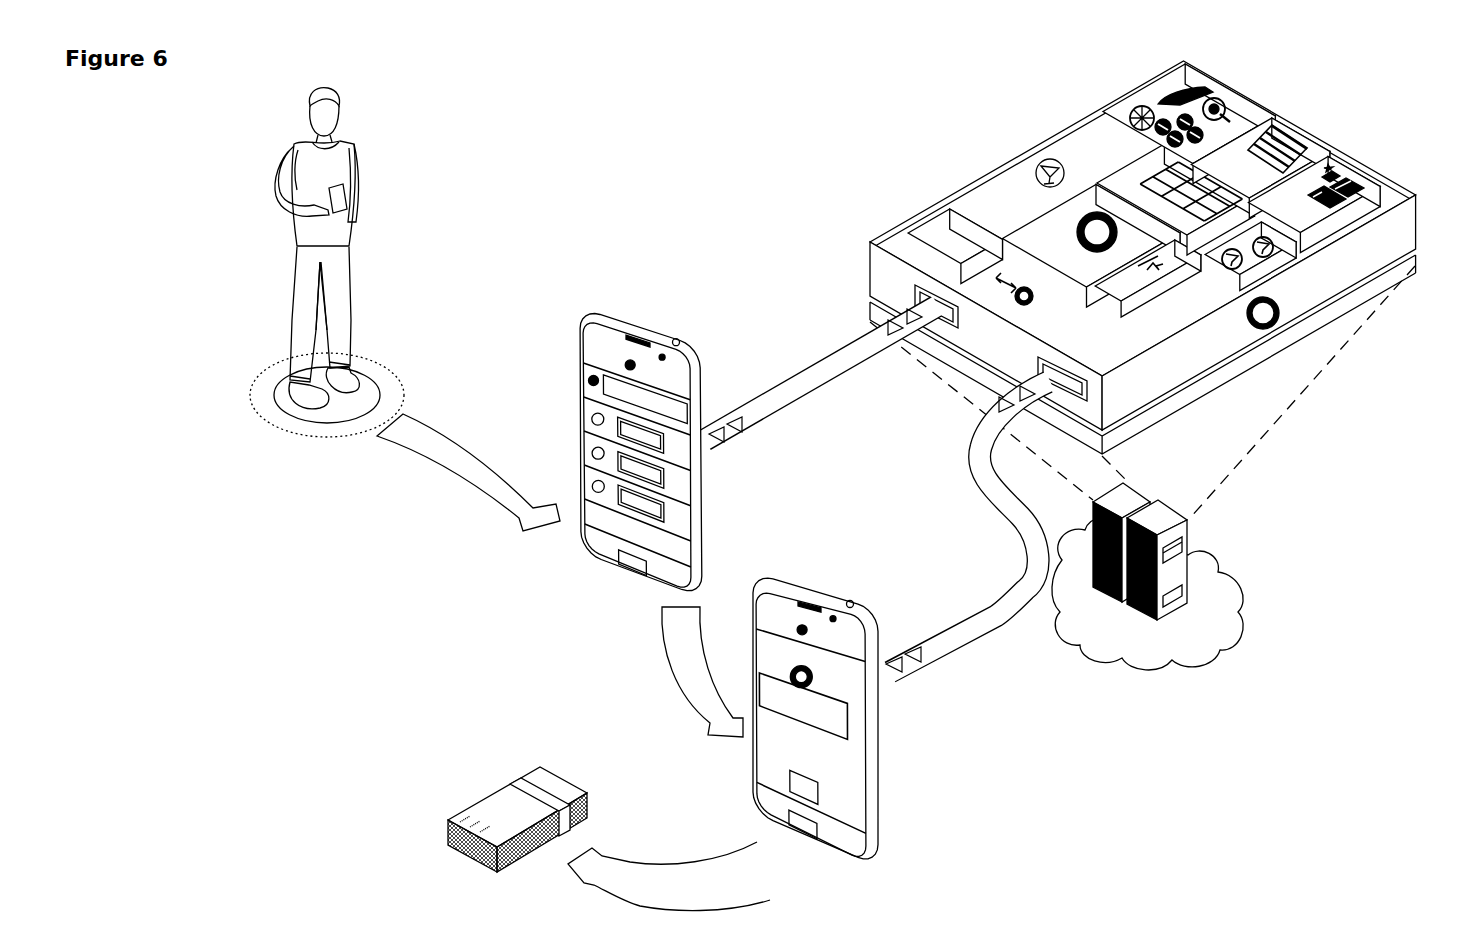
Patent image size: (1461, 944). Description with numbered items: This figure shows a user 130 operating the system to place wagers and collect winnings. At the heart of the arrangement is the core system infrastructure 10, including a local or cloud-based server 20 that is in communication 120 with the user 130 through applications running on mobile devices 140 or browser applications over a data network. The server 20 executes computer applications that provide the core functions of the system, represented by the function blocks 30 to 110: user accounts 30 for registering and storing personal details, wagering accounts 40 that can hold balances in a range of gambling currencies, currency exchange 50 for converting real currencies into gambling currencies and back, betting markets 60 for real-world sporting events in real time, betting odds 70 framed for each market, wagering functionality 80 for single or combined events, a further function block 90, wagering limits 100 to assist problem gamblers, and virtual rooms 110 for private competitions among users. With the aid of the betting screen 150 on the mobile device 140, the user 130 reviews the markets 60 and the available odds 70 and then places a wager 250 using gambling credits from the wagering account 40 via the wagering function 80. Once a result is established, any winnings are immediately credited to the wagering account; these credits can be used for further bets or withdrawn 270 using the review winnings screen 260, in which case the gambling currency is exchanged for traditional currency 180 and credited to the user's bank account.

The core system infrastructure 10 is at (1137, 443).
The server 20 is at (1207, 358).
The user accounts function block 30 is at (1047, 160).
The wagering accounts function block 40 is at (1053, 230).
The currency exchange function block 50 is at (937, 235).
The betting markets function block 60 is at (1184, 78).
The betting odds function block 70 is at (1310, 145).
The wagering function block 80 is at (1160, 165).
The casino module 90 is at (1340, 170).
The wagering limits function block 100 is at (1120, 285).
The virtual room function block 110 is at (1240, 247).
The communication 120 is at (806, 366).
The user 130 is at (307, 285).
The mobile device 140 is at (337, 208).
The betting screen 150 is at (583, 347).
The cash 180 is at (507, 797).
The first step arrow 250 is at (578, 435).
The review winnings screen 260 is at (832, 755).
The withdrawal 270 is at (717, 890).